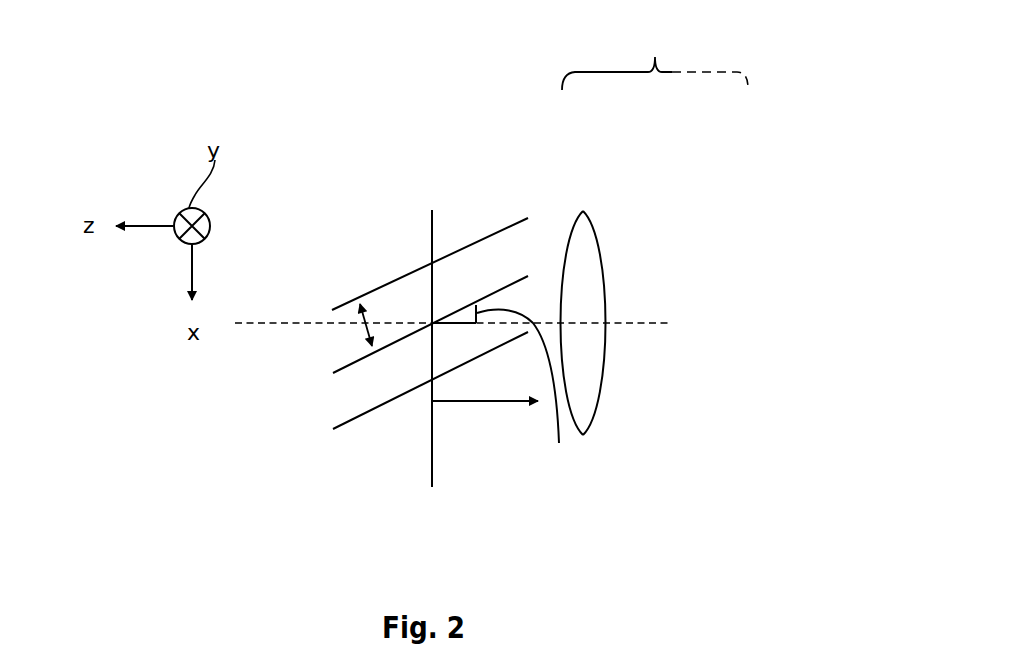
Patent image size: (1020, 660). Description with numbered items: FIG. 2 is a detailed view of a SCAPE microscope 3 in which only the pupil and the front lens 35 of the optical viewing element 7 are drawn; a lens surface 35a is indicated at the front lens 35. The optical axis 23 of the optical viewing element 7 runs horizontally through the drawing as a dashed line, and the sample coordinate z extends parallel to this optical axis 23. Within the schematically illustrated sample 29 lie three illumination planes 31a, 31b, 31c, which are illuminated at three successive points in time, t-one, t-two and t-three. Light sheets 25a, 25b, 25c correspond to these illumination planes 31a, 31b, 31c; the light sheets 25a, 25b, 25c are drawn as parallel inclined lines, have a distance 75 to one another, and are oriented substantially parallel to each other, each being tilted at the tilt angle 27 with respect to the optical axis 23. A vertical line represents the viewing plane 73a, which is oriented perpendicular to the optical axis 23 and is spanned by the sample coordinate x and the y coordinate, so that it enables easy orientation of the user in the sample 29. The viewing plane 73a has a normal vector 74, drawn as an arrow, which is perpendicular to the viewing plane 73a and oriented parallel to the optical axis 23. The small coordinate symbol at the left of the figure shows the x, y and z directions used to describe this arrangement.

The SCAPE microscope 3 is at (108, 135).
The optical viewing element 7 is at (655, 58).
The optical axis 23 is at (243, 322).
The light sheet 25a is at (417, 436).
The light sheet 25b is at (333, 381).
The light sheet 25c is at (331, 312).
The illumination plane 31a is at (380, 407).
The illumination plane 31b is at (342, 372).
The illumination plane 31c is at (343, 308).
The tilt angle 27 is at (525, 391).
The sample 29 is at (334, 284).
The front lens 35 is at (566, 249).
The lens surface 35a is at (598, 288).
The viewing plane 73a is at (433, 240).
The normal vector 74 is at (460, 403).
The distance 75 is at (368, 325).